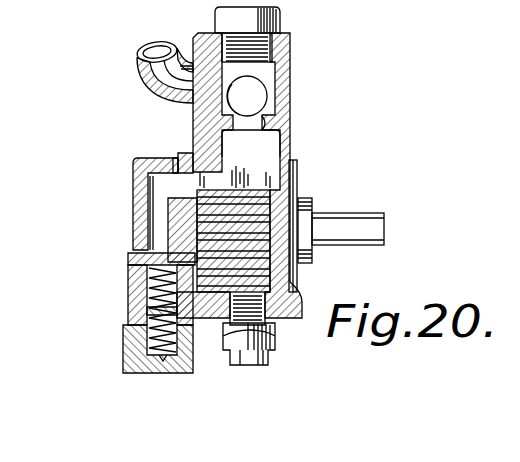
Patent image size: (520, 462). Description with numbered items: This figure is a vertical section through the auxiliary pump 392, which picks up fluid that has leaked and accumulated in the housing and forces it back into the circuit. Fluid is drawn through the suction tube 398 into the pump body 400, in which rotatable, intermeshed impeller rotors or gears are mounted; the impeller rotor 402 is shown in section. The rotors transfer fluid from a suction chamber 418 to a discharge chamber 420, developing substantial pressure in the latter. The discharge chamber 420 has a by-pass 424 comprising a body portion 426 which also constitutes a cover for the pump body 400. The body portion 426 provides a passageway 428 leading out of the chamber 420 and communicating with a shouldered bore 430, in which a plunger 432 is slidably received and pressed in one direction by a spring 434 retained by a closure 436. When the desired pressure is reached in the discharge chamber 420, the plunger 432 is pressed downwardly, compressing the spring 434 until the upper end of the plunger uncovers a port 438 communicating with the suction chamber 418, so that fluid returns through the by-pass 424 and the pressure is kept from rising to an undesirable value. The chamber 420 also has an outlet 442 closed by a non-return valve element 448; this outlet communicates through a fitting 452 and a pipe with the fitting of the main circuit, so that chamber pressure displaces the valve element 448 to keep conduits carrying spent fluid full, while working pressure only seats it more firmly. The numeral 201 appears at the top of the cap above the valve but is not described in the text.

The cap 201 is at (247, 31).
The auxiliary pump 392 is at (192, 111).
The fitting 452 is at (143, 68).
The non-return valve element 448 is at (258, 93).
The outlet 442 is at (283, 130).
The discharge chamber 420 is at (268, 146).
The passageway 428 is at (186, 173).
The shouldered bore 430 is at (151, 183).
The by-pass 424 is at (133, 223).
The body portion 426 is at (134, 256).
The plunger 432 is at (150, 266).
The spring 434 is at (150, 298).
The closure 436 is at (135, 358).
The port 438 is at (203, 279).
The impeller rotor 402 is at (296, 195).
The pump body 400 is at (305, 277).
The suction chamber 418 is at (297, 297).
The suction tube 398 is at (275, 338).